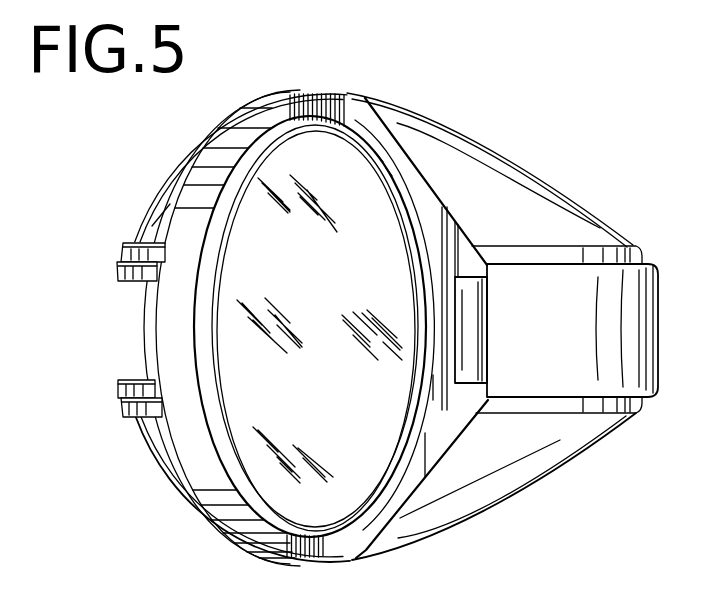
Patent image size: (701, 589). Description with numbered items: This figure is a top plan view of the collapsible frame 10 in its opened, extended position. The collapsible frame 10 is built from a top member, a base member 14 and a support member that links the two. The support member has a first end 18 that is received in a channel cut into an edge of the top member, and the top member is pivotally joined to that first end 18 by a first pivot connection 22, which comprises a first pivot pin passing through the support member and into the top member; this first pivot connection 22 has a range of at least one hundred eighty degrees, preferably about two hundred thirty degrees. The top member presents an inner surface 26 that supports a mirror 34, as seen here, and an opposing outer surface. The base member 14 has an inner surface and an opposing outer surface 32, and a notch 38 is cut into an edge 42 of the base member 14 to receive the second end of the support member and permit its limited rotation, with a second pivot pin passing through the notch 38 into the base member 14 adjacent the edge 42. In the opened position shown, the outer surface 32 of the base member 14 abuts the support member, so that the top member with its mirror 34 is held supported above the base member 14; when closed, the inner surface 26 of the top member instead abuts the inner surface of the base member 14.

The collapsible frame 10 is at (181, 141).
The base member 14 is at (486, 190).
The first end 18 is at (460, 358).
The first pivot connection 22 is at (498, 334).
The inner surface 26 is at (337, 110).
The outer surface 32 is at (569, 374).
The mirror 34 is at (344, 410).
The notch 38 is at (135, 287).
The edge 42 is at (590, 213).